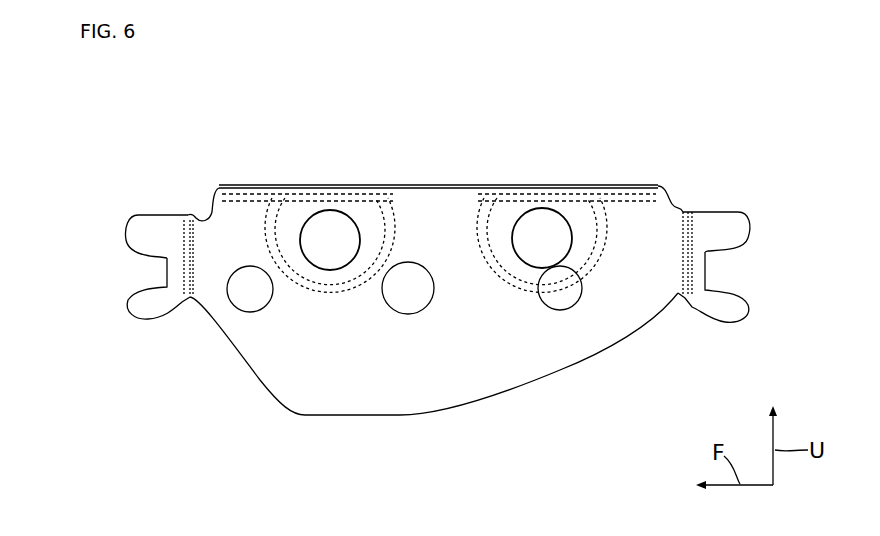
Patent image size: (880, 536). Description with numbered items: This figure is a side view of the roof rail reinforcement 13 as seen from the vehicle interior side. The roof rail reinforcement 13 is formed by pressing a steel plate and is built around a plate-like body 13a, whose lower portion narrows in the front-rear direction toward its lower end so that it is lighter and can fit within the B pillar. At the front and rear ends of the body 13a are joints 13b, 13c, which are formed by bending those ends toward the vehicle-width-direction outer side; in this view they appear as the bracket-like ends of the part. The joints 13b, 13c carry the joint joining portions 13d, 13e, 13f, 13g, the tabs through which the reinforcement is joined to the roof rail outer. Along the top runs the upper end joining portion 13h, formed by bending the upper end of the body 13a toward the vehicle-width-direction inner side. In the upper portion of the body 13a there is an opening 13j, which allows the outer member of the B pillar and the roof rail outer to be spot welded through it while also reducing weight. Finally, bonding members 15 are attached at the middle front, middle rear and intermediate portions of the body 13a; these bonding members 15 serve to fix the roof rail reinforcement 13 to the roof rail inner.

The roof rail reinforcement 13 is at (526, 118).
The body 13a is at (241, 365).
The joint 13b is at (197, 210).
The joint 13c is at (678, 206).
The joint joining portion 13d is at (128, 227).
The joint joining portion 13e is at (138, 318).
The joint joining portion 13f is at (749, 223).
The joint joining portion 13g is at (748, 308).
The upper end joining portion 13h is at (412, 186).
The opening 13j is at (352, 215).
The bonding member 15 is at (241, 266).